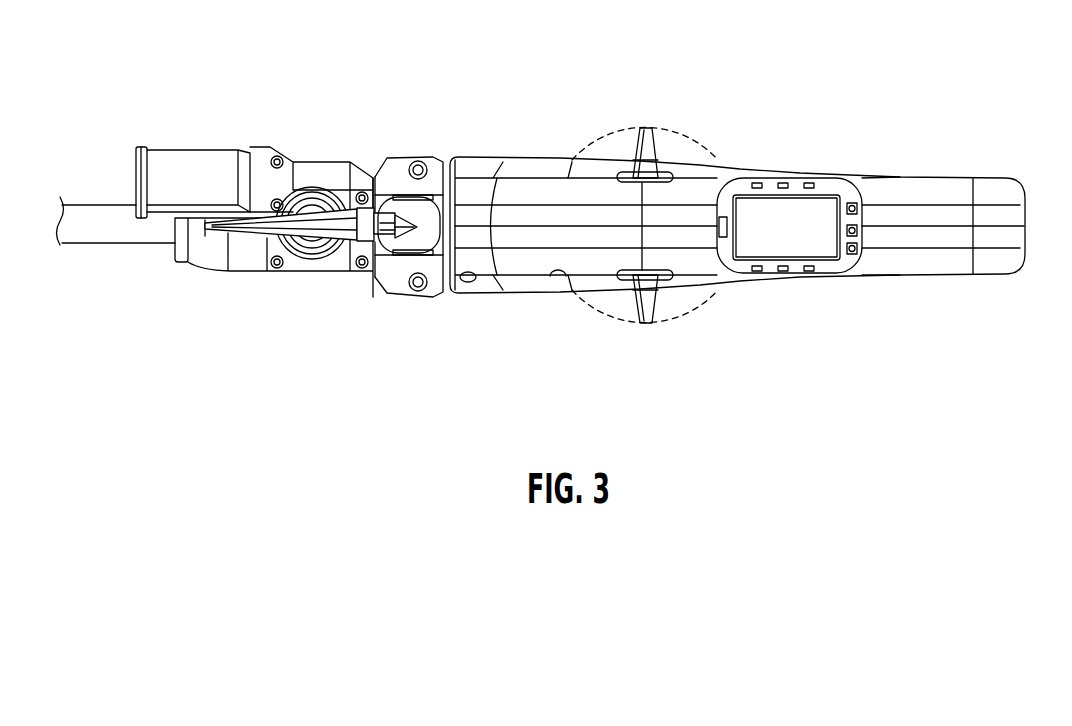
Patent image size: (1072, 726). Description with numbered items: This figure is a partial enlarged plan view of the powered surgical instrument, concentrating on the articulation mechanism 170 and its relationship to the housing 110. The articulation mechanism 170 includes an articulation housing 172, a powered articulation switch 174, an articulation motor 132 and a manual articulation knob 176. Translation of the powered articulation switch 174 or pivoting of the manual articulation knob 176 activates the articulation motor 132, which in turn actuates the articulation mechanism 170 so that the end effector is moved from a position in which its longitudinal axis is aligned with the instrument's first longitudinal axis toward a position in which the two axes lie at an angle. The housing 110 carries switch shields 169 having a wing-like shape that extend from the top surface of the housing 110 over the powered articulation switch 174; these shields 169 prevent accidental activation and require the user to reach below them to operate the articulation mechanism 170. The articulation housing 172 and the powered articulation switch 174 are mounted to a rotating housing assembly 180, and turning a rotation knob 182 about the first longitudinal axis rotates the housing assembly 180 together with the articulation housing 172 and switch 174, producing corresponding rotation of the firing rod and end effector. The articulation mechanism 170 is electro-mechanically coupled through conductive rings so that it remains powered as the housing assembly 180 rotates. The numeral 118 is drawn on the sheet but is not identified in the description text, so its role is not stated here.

The housing 110 is at (894, 284).
The handle body 118 is at (897, 141).
The articulation motor 132 is at (168, 148).
The switch shields 169 is at (658, 128).
The articulation mechanism 170 is at (220, 124).
The articulation housing 172 is at (300, 272).
The powered articulation switch 174 is at (645, 145).
The manual articulation knob 176 is at (309, 220).
The rotating housing assembly 180 is at (356, 304).
The rotation knob 182 is at (410, 295).